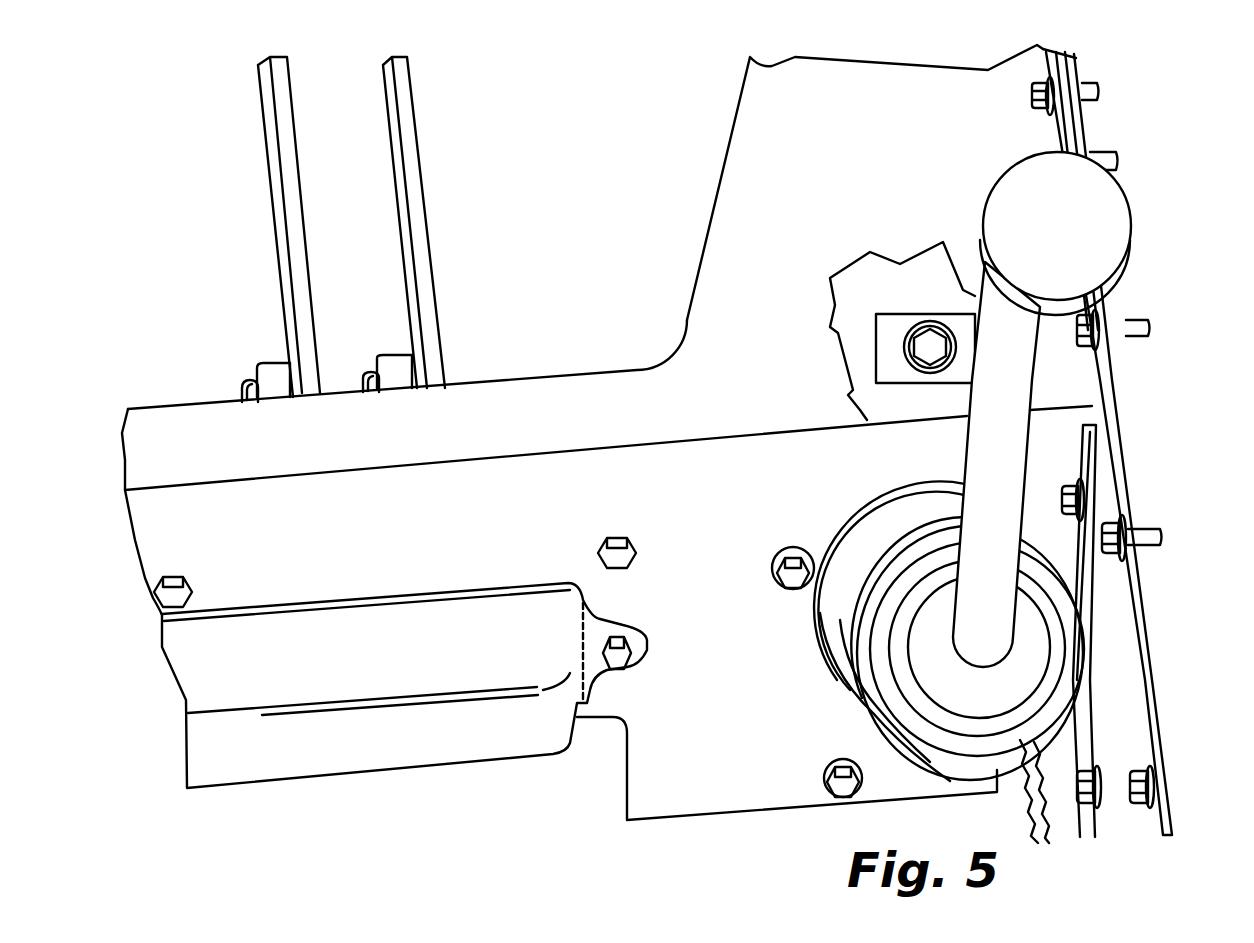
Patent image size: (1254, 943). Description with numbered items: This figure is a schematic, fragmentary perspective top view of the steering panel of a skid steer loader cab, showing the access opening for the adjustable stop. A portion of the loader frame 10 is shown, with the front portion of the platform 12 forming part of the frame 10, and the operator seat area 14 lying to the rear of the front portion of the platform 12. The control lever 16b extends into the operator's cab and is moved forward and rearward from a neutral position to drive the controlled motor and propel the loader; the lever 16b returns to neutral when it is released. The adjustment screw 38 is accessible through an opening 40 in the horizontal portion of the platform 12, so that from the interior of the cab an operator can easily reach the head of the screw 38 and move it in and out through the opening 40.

The frame 10 is at (1153, 692).
The platform 12 is at (584, 370).
The operator seat area 14 is at (757, 172).
The control lever 16b is at (1000, 375).
The adjustment screw 38 is at (925, 360).
The opening 40 is at (917, 330).